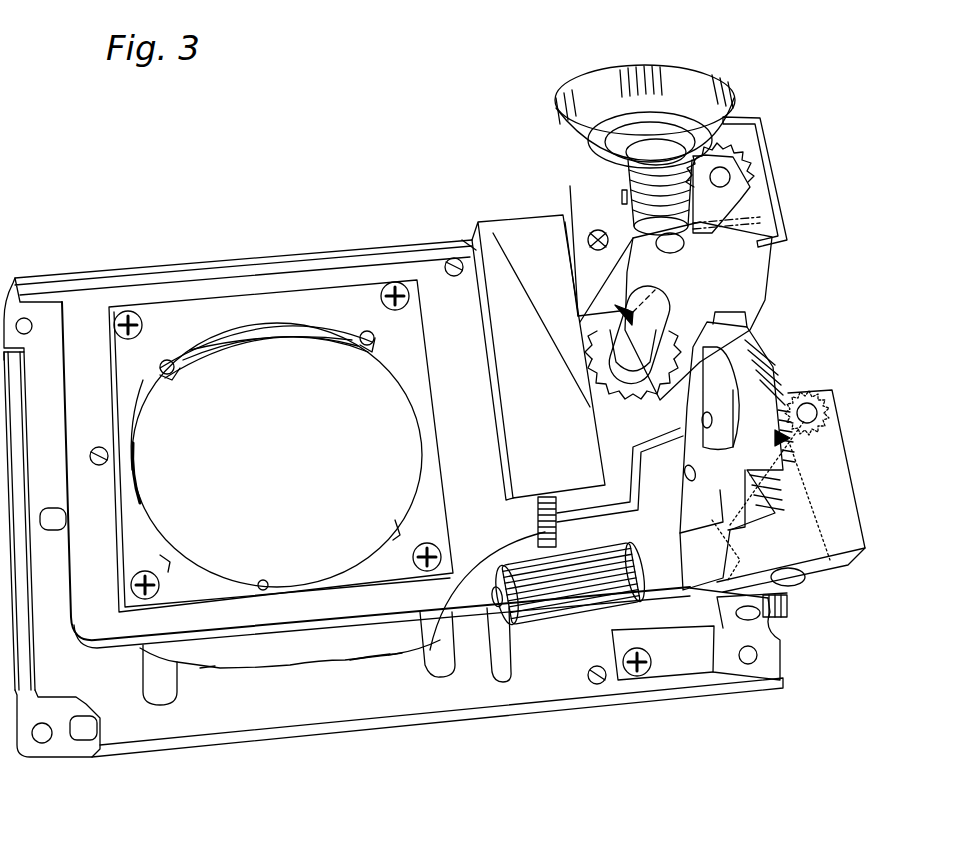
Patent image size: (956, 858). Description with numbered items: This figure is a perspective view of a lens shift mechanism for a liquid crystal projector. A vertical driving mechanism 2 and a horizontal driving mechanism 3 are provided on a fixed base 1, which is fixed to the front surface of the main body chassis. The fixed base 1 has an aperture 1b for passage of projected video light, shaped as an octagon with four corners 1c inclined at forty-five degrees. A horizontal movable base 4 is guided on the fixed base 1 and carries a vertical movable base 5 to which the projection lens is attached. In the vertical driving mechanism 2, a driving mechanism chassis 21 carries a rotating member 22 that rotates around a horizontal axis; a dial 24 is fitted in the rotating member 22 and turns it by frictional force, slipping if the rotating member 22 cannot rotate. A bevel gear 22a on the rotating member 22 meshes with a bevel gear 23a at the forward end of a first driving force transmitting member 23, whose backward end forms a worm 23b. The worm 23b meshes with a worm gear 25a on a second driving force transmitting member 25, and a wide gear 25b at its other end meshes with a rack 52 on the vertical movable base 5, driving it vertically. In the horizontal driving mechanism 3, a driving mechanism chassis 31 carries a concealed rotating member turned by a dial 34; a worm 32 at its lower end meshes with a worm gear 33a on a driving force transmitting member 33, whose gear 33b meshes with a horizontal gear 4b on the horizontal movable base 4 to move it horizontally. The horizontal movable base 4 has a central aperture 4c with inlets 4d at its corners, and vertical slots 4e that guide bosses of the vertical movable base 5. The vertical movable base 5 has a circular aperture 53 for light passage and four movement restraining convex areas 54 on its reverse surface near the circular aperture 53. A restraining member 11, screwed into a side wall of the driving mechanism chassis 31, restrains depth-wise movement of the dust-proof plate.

The fixed base 1 is at (70, 762).
The aperture 1b is at (267, 332).
The corners 1c is at (210, 670).
The vertical driving mechanism 2 is at (682, 390).
The horizontal driving mechanism 3 is at (668, 137).
The horizontal movable base 4 is at (330, 705).
The horizontal gear 4b is at (490, 393).
The aperture for passage 4c is at (367, 650).
The inlets 4d is at (158, 707).
The vertical slots 4e is at (503, 684).
The vertical movable base 5 is at (180, 282).
The restraining member 11 is at (533, 423).
The driving mechanism chassis 21 is at (687, 628).
The rotating member 22 is at (727, 447).
The bevel gear 22a is at (762, 392).
The first driving force transmitting member 23 is at (830, 572).
The bevel gear 23a is at (812, 392).
The worm 23b is at (712, 529).
The dial 24 is at (742, 340).
The second driving force transmitting member 25 is at (638, 651).
The worm gear 25a is at (730, 627).
The gear 25b is at (580, 605).
The driving mechanism chassis 31 is at (780, 222).
The worm 32 is at (622, 188).
The driving force transmitting member 33 is at (535, 265).
The worm gear 33a is at (750, 152).
The gear 33b is at (463, 247).
The dial 34 is at (597, 100).
The rack 52 is at (430, 652).
The circular aperture 53 is at (263, 592).
The movement restraining convex areas 54 is at (160, 362).